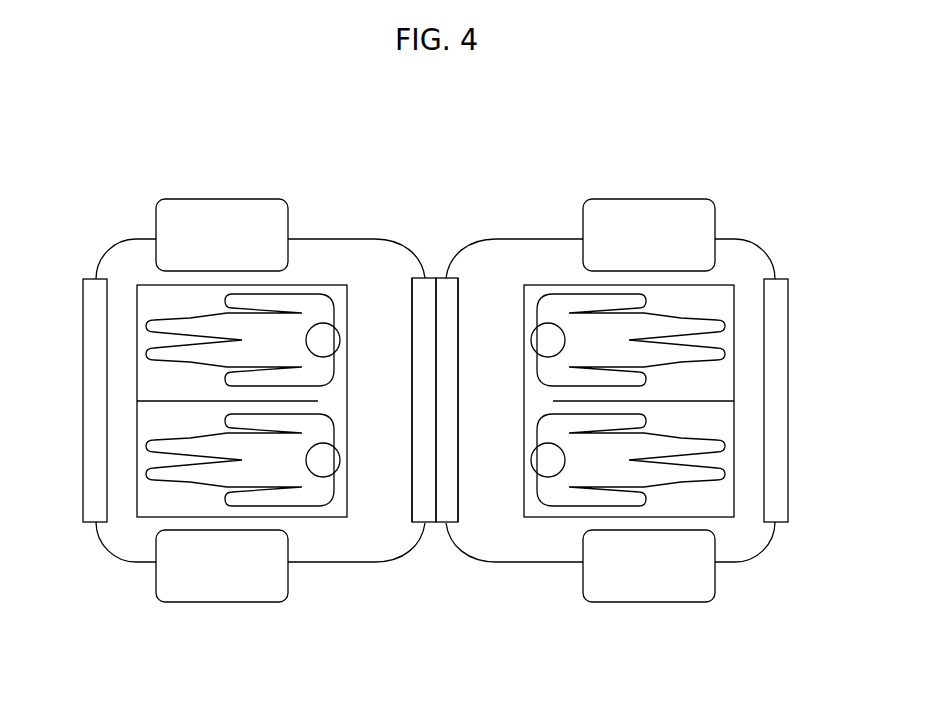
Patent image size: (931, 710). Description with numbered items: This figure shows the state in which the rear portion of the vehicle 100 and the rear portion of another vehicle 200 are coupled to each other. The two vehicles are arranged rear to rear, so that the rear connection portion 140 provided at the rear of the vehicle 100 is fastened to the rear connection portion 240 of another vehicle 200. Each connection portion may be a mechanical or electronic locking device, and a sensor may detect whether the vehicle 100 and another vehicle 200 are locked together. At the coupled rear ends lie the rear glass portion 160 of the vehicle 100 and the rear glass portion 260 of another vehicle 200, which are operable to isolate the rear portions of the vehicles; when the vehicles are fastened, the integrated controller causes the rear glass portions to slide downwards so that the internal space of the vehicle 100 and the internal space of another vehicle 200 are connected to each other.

The vehicle 100 is at (218, 190).
The another vehicle 200 is at (645, 190).
The rear connection portion 140 is at (437, 536).
The rear connection portion of another vehicle 240 is at (437, 542).
The rear glass portion 160 is at (412, 336).
The rear glass portion of another vehicle 260 is at (458, 336).